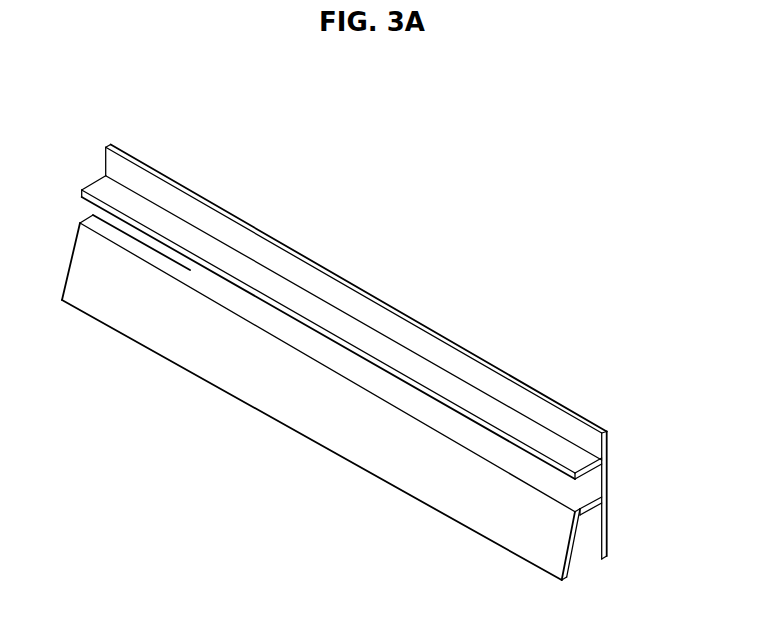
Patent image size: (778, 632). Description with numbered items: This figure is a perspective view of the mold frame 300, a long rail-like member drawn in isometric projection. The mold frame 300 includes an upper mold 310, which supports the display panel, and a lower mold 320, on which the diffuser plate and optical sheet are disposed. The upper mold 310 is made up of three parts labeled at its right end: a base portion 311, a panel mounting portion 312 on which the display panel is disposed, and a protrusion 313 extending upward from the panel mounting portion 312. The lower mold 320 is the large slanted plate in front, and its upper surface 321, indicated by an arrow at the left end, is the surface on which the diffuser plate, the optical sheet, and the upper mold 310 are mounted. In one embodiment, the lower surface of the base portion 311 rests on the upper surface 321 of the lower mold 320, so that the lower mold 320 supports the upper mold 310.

The mold frame 300 is at (95, 107).
The upper mold 310 is at (666, 440).
The base portion 311 is at (594, 479).
The panel mounting portion 312 is at (584, 460).
The protrusion 313 is at (607, 439).
The lower mold 320 is at (560, 519).
The upper surface 321 is at (93, 217).